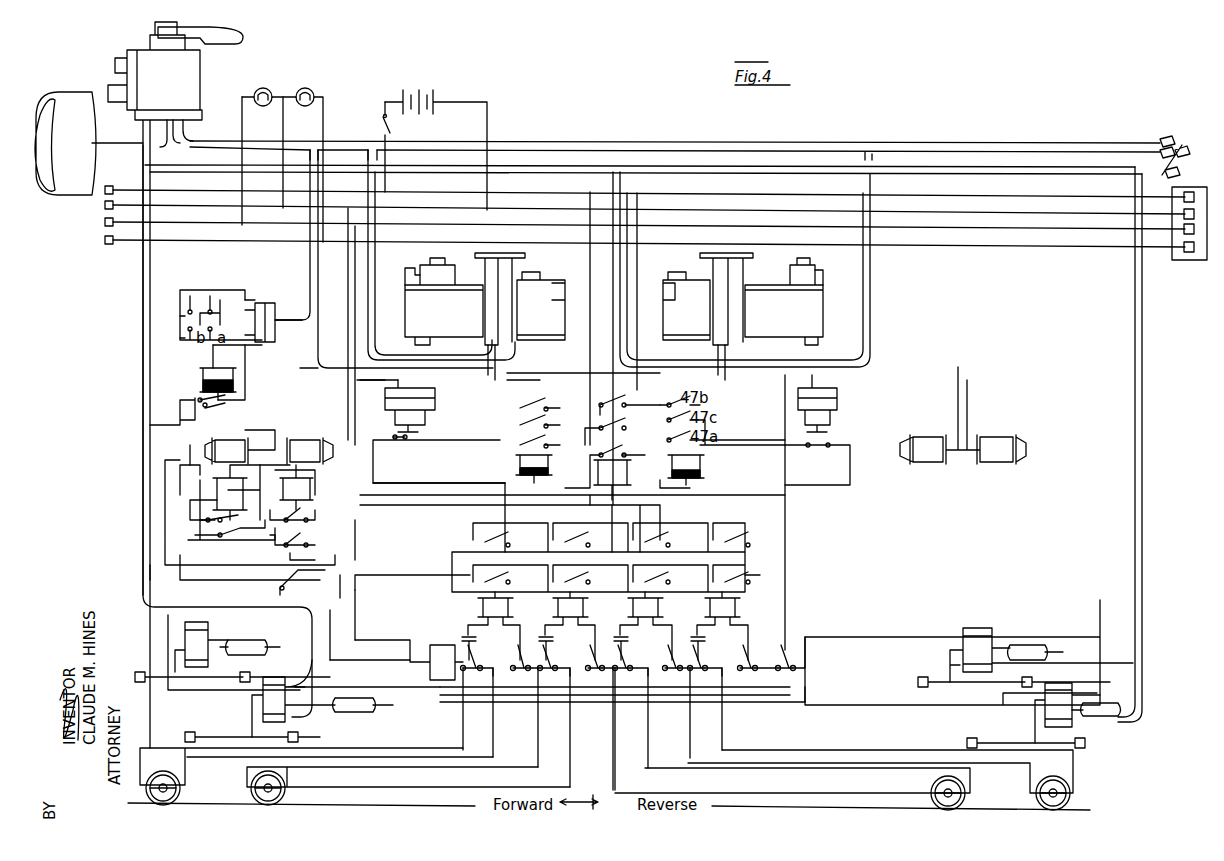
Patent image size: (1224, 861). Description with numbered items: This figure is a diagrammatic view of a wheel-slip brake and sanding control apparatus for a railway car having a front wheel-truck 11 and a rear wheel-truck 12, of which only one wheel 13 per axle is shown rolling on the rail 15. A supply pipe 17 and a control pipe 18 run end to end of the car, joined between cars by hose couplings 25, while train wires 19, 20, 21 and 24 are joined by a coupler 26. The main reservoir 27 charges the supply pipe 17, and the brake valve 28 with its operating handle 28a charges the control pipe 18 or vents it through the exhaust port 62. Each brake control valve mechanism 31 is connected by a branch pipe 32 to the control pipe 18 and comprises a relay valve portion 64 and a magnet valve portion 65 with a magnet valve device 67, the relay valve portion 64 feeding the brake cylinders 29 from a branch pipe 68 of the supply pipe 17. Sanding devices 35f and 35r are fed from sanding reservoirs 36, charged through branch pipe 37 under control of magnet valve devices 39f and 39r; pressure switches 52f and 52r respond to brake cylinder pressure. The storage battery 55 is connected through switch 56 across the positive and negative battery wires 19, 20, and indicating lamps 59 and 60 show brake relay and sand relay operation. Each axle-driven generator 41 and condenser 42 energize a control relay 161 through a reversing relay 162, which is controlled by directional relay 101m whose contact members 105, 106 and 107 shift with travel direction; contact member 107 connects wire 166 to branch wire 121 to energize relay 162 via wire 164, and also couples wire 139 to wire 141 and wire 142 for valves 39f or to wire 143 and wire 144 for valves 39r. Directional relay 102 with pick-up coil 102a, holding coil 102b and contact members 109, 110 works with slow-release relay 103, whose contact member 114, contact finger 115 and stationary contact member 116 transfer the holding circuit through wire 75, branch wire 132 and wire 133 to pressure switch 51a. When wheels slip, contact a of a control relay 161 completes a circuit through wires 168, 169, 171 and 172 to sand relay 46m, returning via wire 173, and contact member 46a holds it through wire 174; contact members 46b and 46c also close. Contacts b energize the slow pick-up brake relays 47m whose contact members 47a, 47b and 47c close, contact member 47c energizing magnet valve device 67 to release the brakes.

The front wheel-truck 11 is at (355, 768).
The rear wheel-truck 12 is at (844, 772).
The wheel 13 is at (172, 780).
The rail 15 is at (757, 806).
The supply pipe 17 is at (600, 158).
The control pipe 18 is at (560, 135).
The train wire 19 is at (642, 184).
The train wire 20 is at (675, 202).
The train wire 21 is at (703, 220).
The train wire 24 is at (733, 236).
The hose coupling 25 is at (1175, 150).
The coupler 26 is at (1192, 262).
The main reservoir 27 is at (66, 92).
The brake valve 28 is at (118, 47).
The operating handle 28a is at (250, 37).
The brake cylinder 29 is at (235, 440).
The brake control valve mechanism 31 is at (519, 256).
The branch pipe 32 is at (370, 300).
The forward sanding device 35f is at (140, 670).
The reverse sanding device 35r is at (190, 732).
The sanding reservoir 36 is at (255, 640).
The branch pipe 37 is at (148, 273).
The forward sanding magnet valve device 39f is at (216, 629).
The reverse sanding magnet valve device 39r is at (283, 682).
The axle-driven generator 41 is at (161, 782).
The condenser 42 is at (474, 640).
The contact member 46a is at (605, 450).
The contact member 46b is at (625, 396).
The contact member 46c is at (615, 420).
The sand relay 46m is at (672, 485).
The contact member 47a is at (543, 444).
The contact member 47b is at (552, 400).
The contact member 47c is at (545, 425).
The brake relay 47m is at (514, 471).
The pressure switch 51a is at (268, 295).
The pressure switch 52f is at (425, 398).
The pressure switch 52r is at (835, 410).
The storage battery 55 is at (421, 88).
The manually operated switch 56 is at (380, 130).
The indicating lamp 59 is at (258, 88).
The indicating lamp 60 is at (302, 88).
The exhaust port 62 is at (165, 147).
The relay valve portion 64 is at (536, 335).
The magnet valve portion 65 is at (462, 335).
The magnet valve device 67 is at (445, 262).
The branch pipe 68 is at (612, 330).
The wire 75 is at (180, 292).
The directional relay 101m is at (306, 478).
The directional relay 102 is at (244, 478).
The pick-up coil 102a is at (217, 490).
The holding coil 102b is at (215, 502).
The relay 103 is at (202, 375).
The contact member 105 is at (304, 508).
The contact member 106 is at (304, 535).
The contact member 107 is at (292, 575).
The contact member 109 is at (220, 530).
The contact member 110 is at (236, 538).
The contact member 114 is at (222, 410).
The contact finger 115 is at (198, 395).
The stationary contact member 116 is at (178, 405).
The branch wire 121 is at (180, 316).
The branch wire 132 is at (180, 338).
The wire 133 is at (228, 292).
The wire 139 is at (642, 290).
The wire 141 is at (800, 666).
The wire 142 is at (848, 637).
The wire 143 is at (800, 690).
The wire 144 is at (807, 705).
The control relay 161 is at (479, 613).
The reversing relay 162 is at (452, 632).
The wire 164 is at (352, 625).
The wire 166 is at (348, 663).
The wire 168 is at (362, 548).
The wire 169 is at (452, 558).
The wire 171 is at (756, 565).
The wire 172 is at (610, 520).
The wire 173 is at (430, 480).
The wire 174 is at (408, 505).